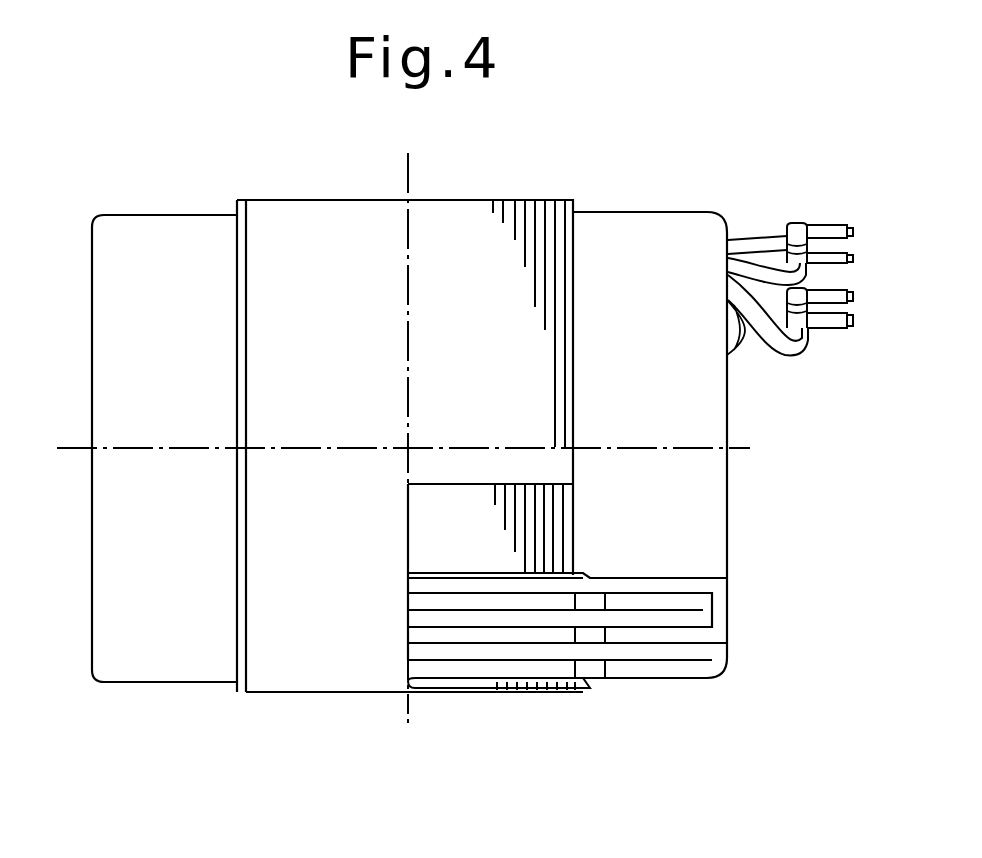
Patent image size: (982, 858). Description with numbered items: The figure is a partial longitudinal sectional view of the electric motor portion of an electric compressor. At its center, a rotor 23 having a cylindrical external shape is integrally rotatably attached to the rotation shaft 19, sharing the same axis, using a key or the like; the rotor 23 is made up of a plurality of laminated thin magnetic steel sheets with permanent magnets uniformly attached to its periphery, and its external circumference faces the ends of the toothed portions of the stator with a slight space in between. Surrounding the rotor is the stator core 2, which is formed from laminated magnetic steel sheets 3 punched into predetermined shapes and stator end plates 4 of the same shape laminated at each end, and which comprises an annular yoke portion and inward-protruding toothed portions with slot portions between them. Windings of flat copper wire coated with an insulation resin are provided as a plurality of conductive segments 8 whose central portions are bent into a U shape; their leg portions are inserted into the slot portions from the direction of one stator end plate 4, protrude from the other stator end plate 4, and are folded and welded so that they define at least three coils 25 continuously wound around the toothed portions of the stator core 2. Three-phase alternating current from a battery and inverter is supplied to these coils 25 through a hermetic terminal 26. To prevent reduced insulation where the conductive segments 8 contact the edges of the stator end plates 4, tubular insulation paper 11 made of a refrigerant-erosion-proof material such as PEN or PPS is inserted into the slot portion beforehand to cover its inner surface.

The stator core 2 is at (452, 237).
The laminated magnetic steel sheets 3 is at (520, 695).
The stator end plate 4 is at (240, 694).
The conductive segment 8 is at (727, 666).
The insulation paper 11 is at (442, 694).
The rotation shaft 19 is at (438, 466).
The rotor 23 is at (438, 545).
The coil 25 is at (658, 245).
The hermetic terminal 26 is at (822, 325).